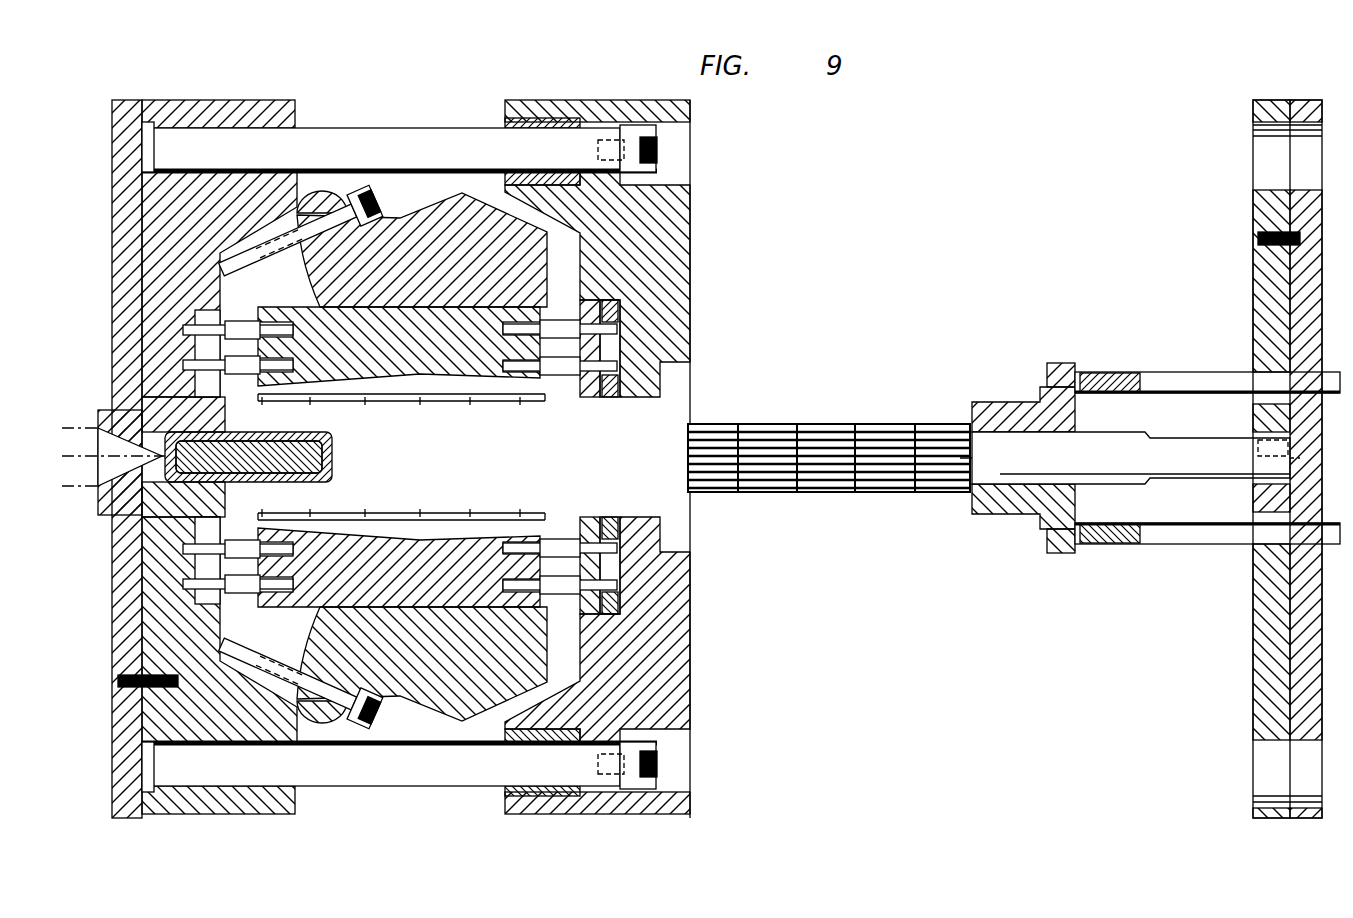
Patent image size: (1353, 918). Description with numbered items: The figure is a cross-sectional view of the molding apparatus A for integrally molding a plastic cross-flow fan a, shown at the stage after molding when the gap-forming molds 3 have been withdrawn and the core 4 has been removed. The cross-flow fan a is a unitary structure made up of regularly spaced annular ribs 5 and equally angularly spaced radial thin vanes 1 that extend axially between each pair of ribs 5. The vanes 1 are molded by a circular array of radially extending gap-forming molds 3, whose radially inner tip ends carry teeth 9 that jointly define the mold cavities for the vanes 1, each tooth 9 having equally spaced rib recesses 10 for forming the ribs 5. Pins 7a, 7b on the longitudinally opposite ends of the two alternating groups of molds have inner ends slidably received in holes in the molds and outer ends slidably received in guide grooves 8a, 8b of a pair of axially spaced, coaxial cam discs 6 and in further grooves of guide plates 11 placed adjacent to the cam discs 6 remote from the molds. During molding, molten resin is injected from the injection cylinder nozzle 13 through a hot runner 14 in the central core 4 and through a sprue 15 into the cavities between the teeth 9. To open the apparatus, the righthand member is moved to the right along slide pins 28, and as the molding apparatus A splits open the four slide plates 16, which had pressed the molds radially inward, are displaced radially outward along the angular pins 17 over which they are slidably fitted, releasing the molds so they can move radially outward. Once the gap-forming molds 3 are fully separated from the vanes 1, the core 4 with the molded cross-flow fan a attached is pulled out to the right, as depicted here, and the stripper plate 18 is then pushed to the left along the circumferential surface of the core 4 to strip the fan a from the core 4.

The vanes 1 is at (926, 494).
The gap-forming molds 3 is at (402, 378).
The core 4 is at (1015, 478).
The annular ribs 5 is at (742, 426).
The cam discs 6 is at (600, 298).
The pins 7a is at (200, 340).
The pins 7b is at (195, 362).
The guide grooves 8a is at (622, 346).
The guide grooves 8b is at (236, 522).
The teeth 9 is at (457, 404).
The rib recesses 10 is at (490, 404).
The guide plates 11 is at (606, 312).
The injection cylinder nozzle 13 is at (160, 456).
The hot runner 14 is at (125, 512).
The sprue 15 is at (334, 456).
The slide plates 16 is at (405, 215).
The angular pins 17 is at (352, 192).
The stripper plate 18 is at (1000, 402).
The slide pins 28 is at (323, 132).
The molding apparatus A is at (597, 87).
The cross-flow fan a is at (858, 420).